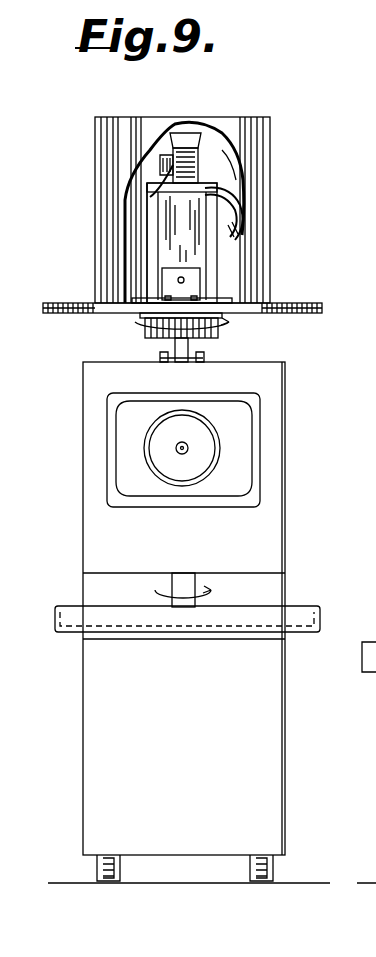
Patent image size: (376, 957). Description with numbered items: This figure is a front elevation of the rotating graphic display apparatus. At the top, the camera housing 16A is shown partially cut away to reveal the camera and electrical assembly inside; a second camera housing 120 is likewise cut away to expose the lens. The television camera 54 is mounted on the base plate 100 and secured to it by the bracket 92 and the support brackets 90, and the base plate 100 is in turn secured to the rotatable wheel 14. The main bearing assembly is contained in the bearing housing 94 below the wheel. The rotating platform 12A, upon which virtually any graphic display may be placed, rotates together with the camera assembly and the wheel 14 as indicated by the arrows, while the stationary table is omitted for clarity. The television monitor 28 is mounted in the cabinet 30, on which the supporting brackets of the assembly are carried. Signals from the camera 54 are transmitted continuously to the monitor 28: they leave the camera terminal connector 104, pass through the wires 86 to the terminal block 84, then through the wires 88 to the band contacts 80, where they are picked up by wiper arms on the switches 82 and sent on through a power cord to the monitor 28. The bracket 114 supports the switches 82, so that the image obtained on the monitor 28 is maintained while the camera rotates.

The rotating graphic display platform 12A is at (293, 618).
The rotatable wheel 14 is at (302, 303).
The camera housing 16A is at (252, 150).
The television monitor 28 is at (237, 452).
The television monitor cabinet 30 is at (247, 540).
The television camera 54 is at (192, 248).
The band contacts 80 is at (181, 146).
The switches 82 is at (150, 148).
The terminal block 84 is at (238, 222).
The wires 86 is at (203, 182).
The wires 88 is at (228, 165).
The support brackets 90 is at (150, 243).
The support bracket 92 is at (197, 281).
The bearing housing 94 is at (203, 350).
The base plate 100 is at (147, 304).
The camera terminal connector 104 is at (150, 197).
The bracket 114 is at (168, 133).
The camera housing 120 is at (256, 314).